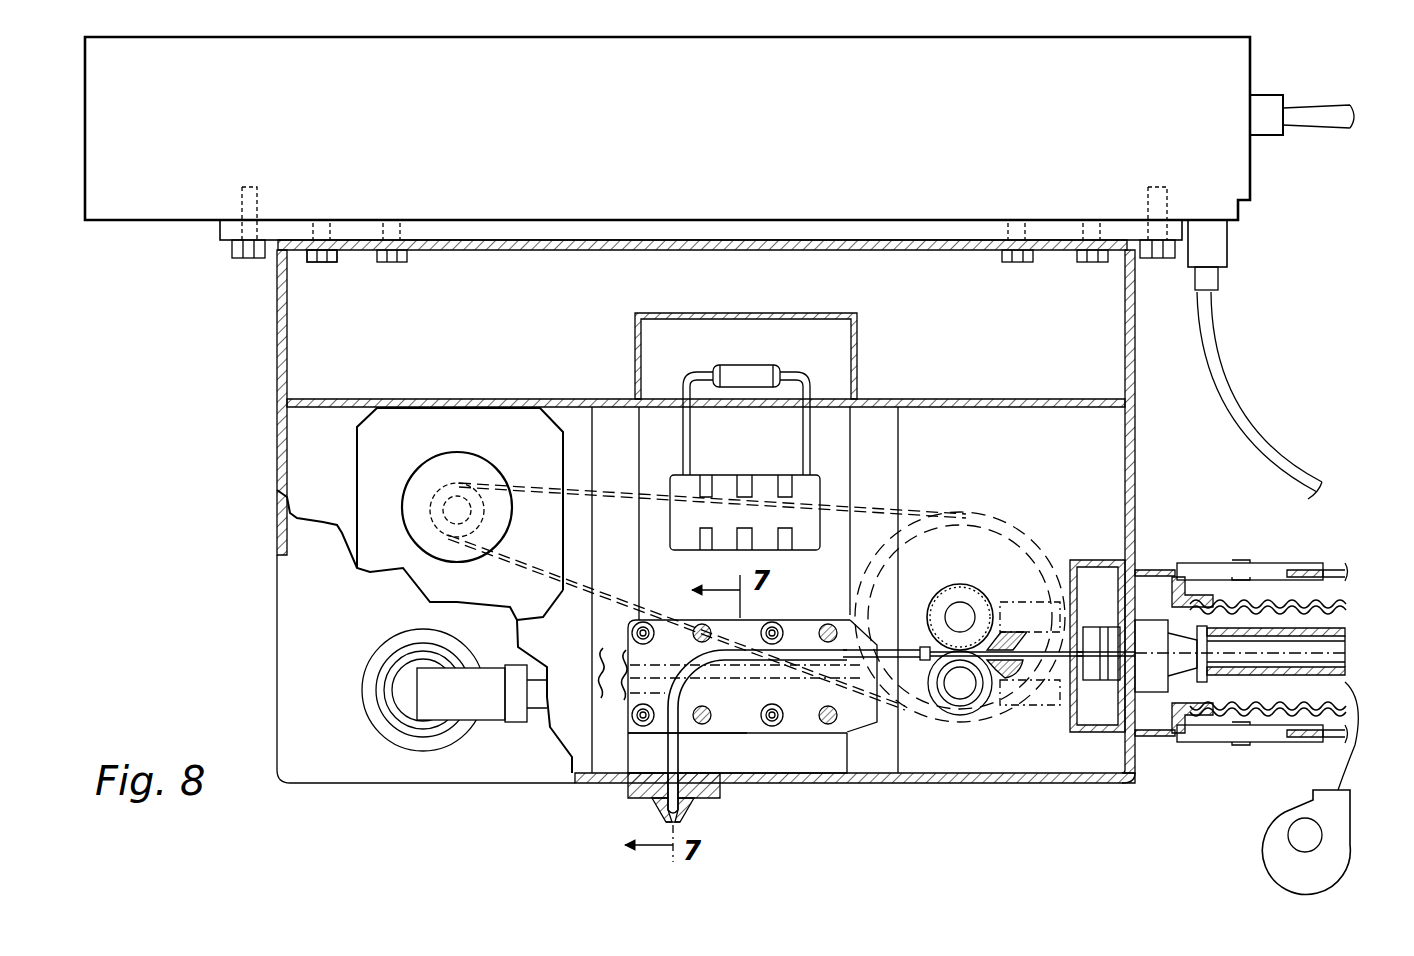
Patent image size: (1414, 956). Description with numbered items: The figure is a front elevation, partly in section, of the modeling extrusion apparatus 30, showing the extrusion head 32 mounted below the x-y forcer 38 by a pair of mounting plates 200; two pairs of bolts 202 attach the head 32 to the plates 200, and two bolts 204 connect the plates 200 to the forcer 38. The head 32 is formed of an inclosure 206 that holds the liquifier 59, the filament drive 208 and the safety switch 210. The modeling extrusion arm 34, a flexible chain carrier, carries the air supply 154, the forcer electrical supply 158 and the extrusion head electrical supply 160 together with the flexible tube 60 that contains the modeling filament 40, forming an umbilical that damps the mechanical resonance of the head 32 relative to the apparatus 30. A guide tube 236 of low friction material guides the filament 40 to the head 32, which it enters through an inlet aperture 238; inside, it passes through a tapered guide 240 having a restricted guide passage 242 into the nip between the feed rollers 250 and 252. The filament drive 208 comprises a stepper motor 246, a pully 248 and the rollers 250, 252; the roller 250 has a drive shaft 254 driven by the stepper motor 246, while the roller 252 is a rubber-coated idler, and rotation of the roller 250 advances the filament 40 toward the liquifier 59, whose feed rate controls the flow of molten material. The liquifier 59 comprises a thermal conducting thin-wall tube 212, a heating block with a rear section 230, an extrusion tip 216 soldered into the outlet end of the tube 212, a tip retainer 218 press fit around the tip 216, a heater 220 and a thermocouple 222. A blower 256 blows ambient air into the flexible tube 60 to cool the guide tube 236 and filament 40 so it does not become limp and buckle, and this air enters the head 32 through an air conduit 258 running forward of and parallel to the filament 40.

The x-y forcer 38 is at (835, 52).
The forcer electrical supply 158 is at (1293, 116).
The mounting plates 200 is at (220, 230).
The bolts 204 is at (248, 248).
The bolts 202 is at (320, 262).
The extrusion head 32 is at (1138, 340).
The air supply 154 is at (1208, 318).
The inclosure 206 is at (282, 447).
The stepper motor 246 is at (392, 425).
The filament drive 208 is at (398, 498).
The pully 248 is at (517, 567).
The safety switch 210 is at (760, 378).
The modeling extrusion head electrical supply 160 is at (447, 690).
The liquifier 59 is at (748, 744).
The thermal conducting thin-wall tube 212 is at (856, 725).
The heater 220 is at (640, 667).
The tip retainer 218 is at (628, 790).
The extrusion tip 216 is at (690, 806).
The rear section 230 is at (740, 735).
The thermocouple 222 is at (613, 712).
The feed roller 250 is at (958, 596).
The drive shaft 254 is at (955, 618).
The feed roller 252 is at (961, 698).
The restricted guide passage 242 is at (972, 703).
The tapered guide 240 is at (1018, 672).
The air conduit 258 is at (1088, 560).
The modeling extrusion arm 34 is at (1272, 568).
The flexible tube 60 is at (1260, 738).
The modeling filament 40 is at (1288, 652).
The guide tube 236 is at (1302, 685).
The inlet aperture 238 is at (1140, 662).
The blower 256 is at (1335, 800).
The modeling extrusion apparatus 30 is at (377, 797).